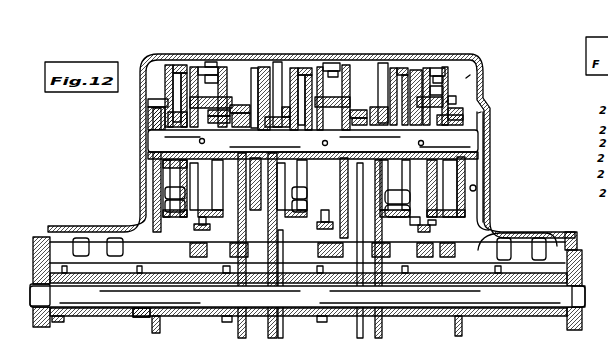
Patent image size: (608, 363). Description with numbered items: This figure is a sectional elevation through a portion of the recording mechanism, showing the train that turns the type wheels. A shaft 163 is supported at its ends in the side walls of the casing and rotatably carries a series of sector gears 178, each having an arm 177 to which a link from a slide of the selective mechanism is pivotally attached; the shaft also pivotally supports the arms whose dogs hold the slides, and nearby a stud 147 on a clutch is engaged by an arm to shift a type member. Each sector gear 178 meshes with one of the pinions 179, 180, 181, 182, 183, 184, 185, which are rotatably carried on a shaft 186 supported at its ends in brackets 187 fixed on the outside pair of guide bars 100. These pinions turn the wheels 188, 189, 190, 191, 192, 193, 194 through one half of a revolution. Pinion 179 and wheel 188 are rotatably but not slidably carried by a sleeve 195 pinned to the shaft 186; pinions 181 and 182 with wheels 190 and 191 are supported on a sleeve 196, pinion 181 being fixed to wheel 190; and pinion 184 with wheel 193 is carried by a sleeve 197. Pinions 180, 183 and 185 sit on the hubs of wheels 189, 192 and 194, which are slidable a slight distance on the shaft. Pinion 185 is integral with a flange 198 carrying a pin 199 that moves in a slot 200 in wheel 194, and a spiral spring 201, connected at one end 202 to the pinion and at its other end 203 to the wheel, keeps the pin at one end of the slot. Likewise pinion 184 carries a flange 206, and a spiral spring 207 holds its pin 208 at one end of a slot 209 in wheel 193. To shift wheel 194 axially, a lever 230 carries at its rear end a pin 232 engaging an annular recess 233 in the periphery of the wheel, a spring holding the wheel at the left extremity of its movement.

The guide bars 100 is at (522, 238).
The stud 147 is at (140, 318).
The shaft 163 is at (505, 300).
The arm 177 is at (455, 325).
The sector gear 178 is at (467, 155).
The pinion 179 is at (157, 106).
The pinion 180 is at (238, 105).
The pinion 181 is at (278, 108).
The pinion 182 is at (296, 72).
The pinion 183 is at (362, 112).
The pinion 184 is at (385, 78).
The pinion 185 is at (462, 104).
The shaft 186 is at (462, 140).
The brackets 187 is at (148, 190).
The wheel 188 is at (182, 63).
The wheel 189 is at (212, 63).
The wheel 190 is at (265, 60).
The wheel 191 is at (303, 65).
The wheel 192 is at (330, 63).
The wheel 193 is at (399, 87).
The wheel 194 is at (427, 98).
The sleeve 195 is at (152, 117).
The sleeve 196 is at (252, 62).
The sleeve 197 is at (349, 108).
The flange 198 is at (432, 90).
The pin 199 is at (448, 100).
The slot 200 is at (470, 75).
The spiral spring 201 is at (462, 177).
The end of spiral spring 202 is at (481, 112).
The end of spiral spring 203 is at (450, 98).
The flange 206 is at (393, 70).
The spiral spring 207 is at (410, 77).
The pin 208 is at (398, 214).
The slot 209 is at (415, 226).
The lever 230 is at (434, 224).
The pin 232 is at (428, 229).
The annular recess 233 is at (442, 208).